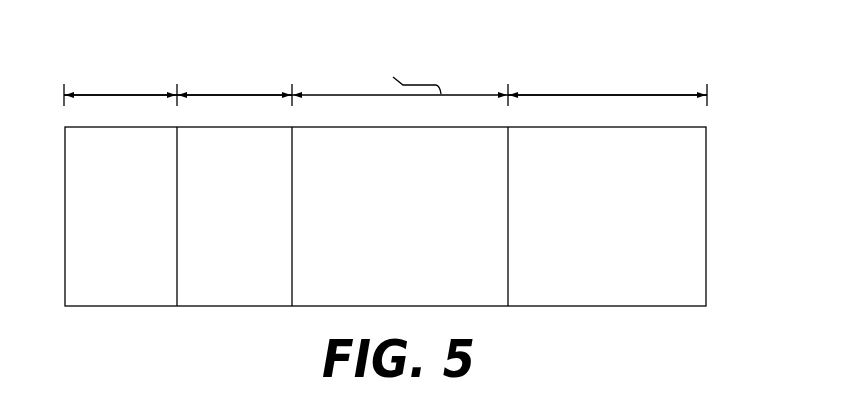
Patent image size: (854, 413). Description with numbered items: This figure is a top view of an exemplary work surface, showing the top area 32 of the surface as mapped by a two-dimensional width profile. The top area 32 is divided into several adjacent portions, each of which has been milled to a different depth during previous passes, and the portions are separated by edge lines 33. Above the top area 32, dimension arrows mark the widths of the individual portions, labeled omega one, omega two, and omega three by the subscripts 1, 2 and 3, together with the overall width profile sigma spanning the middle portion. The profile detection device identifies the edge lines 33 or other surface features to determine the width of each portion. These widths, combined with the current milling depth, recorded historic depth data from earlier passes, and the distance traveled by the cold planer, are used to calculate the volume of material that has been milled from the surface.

The top area 32 is at (418, 178).
The edge lines 33 is at (176, 200).
The omega-1 time span 1 is at (256, 94).
The omega-2 time span 2 is at (667, 94).
The omega-3 time span 3 is at (150, 94).